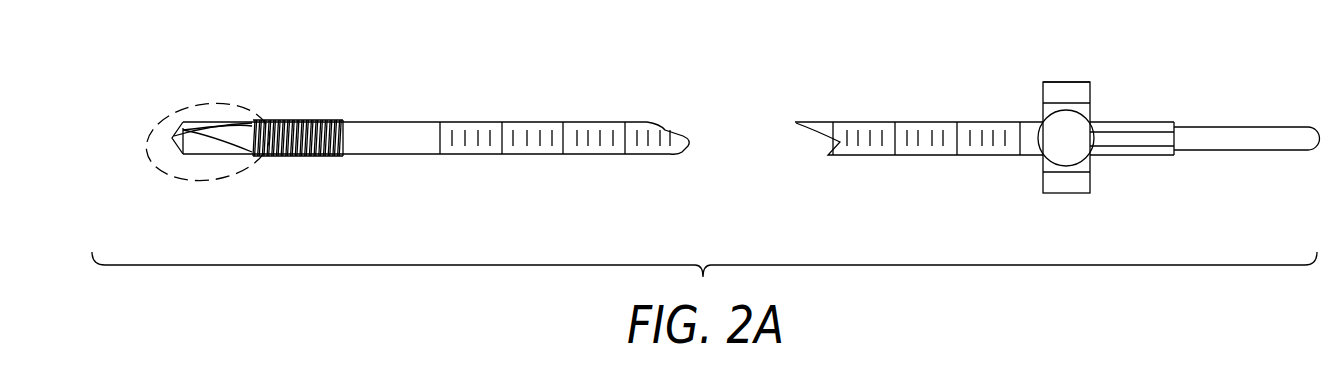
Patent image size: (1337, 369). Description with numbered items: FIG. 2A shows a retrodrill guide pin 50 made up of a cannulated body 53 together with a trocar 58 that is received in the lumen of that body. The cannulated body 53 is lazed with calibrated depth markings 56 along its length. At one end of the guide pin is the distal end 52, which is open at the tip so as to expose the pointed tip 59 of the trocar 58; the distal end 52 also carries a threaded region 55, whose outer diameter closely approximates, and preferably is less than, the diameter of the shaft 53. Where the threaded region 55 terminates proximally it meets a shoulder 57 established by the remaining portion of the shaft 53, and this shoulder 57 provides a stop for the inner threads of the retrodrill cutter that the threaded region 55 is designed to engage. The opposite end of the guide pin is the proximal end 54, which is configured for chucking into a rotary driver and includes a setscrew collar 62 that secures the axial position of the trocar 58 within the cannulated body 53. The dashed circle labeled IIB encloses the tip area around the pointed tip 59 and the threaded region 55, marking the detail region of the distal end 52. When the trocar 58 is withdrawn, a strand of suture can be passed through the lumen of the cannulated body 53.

The retrodrill guide pin 50 is at (923, 83).
The distal end 52 is at (283, 82).
The cannulated body 53 is at (602, 147).
The proximal end 54 is at (1123, 188).
The threaded region 55 is at (300, 156).
The calibrated depth markings 56 is at (513, 146).
The shoulder 57 is at (345, 138).
The trocar 58 is at (1278, 127).
The pointed tip 59 is at (167, 178).
The setscrew collar 62 is at (1066, 82).
The detail view circle IIB is at (142, 150).